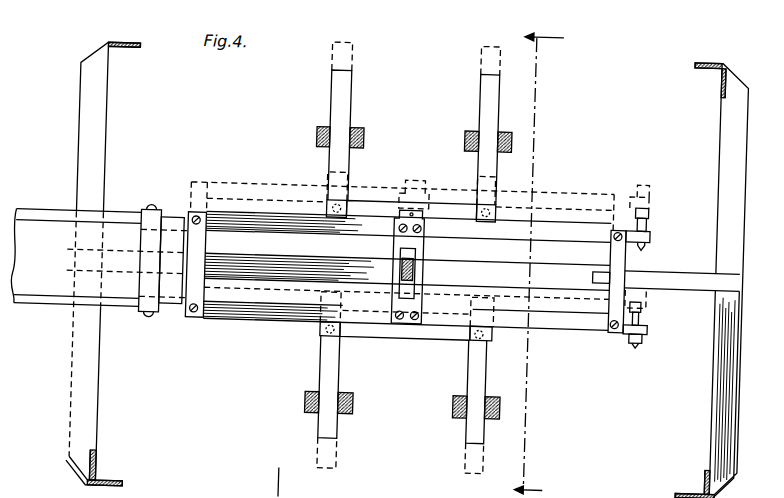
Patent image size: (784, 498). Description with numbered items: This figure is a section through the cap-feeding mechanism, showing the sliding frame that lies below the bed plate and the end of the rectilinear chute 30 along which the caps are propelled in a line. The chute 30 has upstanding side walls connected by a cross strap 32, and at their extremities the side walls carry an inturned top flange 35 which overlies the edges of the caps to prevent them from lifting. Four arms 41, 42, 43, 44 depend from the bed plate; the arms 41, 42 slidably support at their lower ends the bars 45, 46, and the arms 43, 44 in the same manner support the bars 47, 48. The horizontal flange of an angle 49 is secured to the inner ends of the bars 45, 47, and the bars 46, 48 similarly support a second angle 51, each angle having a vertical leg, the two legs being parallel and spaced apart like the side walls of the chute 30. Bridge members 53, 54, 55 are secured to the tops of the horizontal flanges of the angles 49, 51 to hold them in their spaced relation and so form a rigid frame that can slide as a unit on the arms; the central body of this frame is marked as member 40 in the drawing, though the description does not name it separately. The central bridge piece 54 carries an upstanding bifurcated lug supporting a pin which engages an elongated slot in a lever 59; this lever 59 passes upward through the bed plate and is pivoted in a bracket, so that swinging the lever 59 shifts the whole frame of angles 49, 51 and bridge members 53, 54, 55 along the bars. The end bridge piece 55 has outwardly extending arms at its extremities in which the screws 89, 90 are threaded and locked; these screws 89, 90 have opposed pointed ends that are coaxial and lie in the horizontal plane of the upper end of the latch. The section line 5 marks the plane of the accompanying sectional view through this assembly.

The section line 5- 5 is at (427, 259).
The rectilinear chute 30 is at (54, 208).
The cross strap 32 is at (151, 222).
The inturned top flange 35 is at (171, 228).
The cylinder 40 is at (489, 267).
The arm 41 is at (313, 132).
The arm 42 is at (310, 402).
The arm 43 is at (472, 129).
The arm 44 is at (463, 404).
The bar 45 is at (341, 103).
The bar 46 is at (337, 375).
The bar 47 is at (488, 165).
The bar 48 is at (482, 372).
The angle 49 is at (542, 221).
The angle 51 is at (597, 320).
The bridge member 53 is at (193, 244).
The bridge piece 54 is at (427, 242).
The bridge piece 55 is at (612, 245).
The lever 59 is at (403, 264).
The screw 89 is at (650, 232).
The screw 90 is at (650, 309).